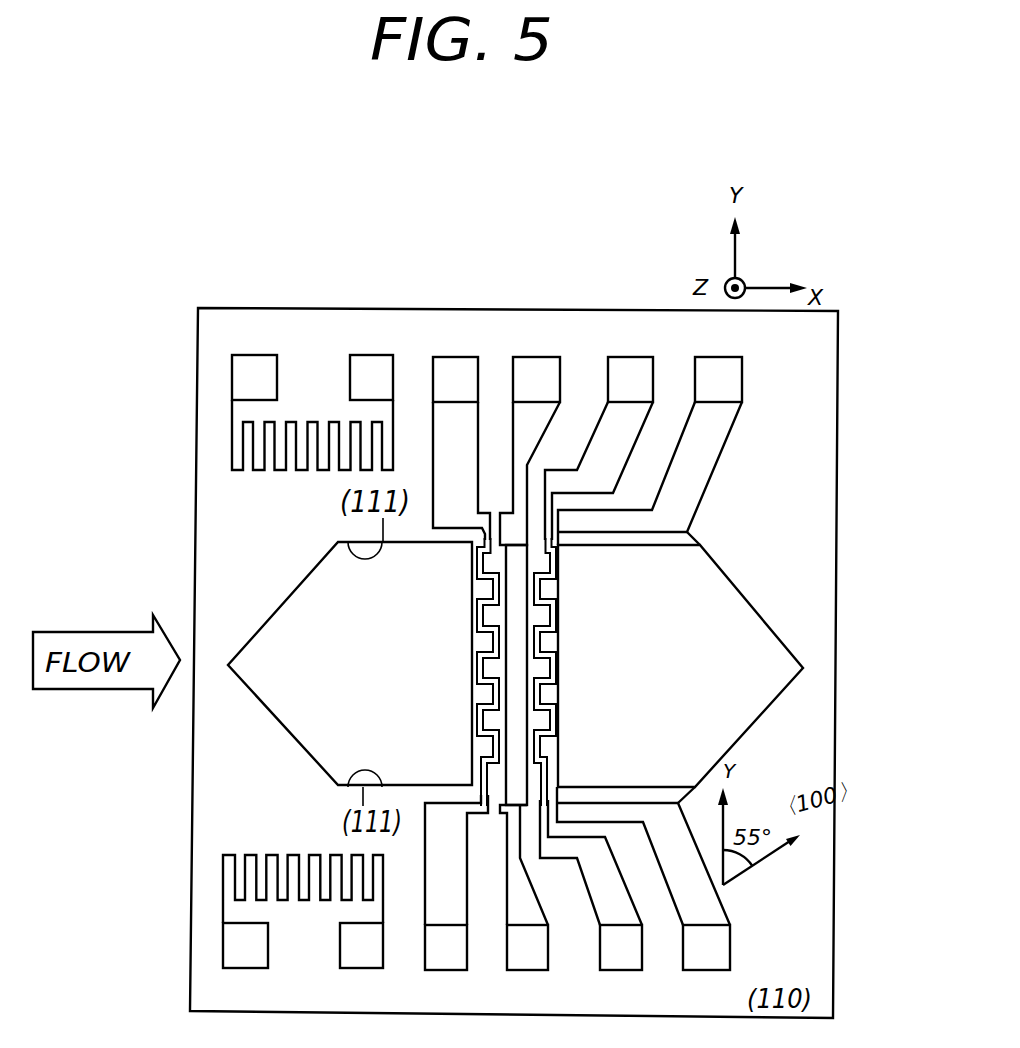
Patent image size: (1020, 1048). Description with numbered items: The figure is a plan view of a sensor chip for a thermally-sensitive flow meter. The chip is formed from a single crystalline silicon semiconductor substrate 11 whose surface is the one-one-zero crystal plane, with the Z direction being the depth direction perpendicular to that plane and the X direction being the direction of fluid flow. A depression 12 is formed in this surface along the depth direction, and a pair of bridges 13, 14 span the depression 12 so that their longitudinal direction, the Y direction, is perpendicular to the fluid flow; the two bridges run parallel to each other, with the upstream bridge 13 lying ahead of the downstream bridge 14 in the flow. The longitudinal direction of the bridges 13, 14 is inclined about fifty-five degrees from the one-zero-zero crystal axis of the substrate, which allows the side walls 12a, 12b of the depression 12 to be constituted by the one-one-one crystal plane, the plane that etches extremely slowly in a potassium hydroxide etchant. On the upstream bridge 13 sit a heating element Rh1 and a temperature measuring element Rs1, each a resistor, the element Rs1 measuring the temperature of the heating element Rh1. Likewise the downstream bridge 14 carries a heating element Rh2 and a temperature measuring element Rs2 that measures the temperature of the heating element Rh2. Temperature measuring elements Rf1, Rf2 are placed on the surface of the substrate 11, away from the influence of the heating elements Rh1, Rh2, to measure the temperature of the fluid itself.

The semiconductor substrate 11 is at (822, 400).
The depression 12 is at (757, 645).
The side wall of the depression 12a is at (683, 553).
The side wall of the depression 12b is at (680, 783).
The upstream bridge 13 is at (435, 672).
The downstream bridge 14 is at (597, 672).
The heating element Rh1 is at (473, 593).
The heating element Rh2 is at (553, 598).
The temperature measuring element Rs1 is at (472, 665).
The temperature measuring element Rs2 is at (552, 692).
The temperature measuring element Rf1 is at (312, 437).
The temperature measuring element Rf2 is at (303, 894).